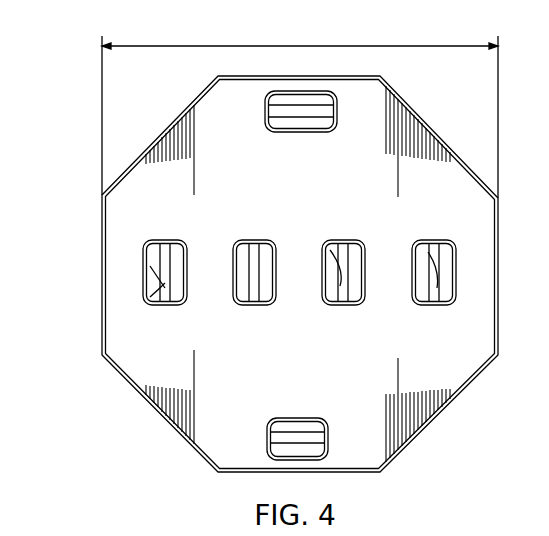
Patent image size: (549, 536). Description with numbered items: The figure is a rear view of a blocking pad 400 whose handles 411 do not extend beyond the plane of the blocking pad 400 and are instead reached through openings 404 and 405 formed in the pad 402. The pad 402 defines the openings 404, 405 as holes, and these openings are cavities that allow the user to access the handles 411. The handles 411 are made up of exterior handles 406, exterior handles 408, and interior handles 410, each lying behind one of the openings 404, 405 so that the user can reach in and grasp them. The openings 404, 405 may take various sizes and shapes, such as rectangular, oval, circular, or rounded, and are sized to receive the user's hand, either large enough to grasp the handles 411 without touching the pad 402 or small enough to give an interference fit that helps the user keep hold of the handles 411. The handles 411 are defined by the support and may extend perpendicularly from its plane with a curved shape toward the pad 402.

The blocking pad 400 is at (76, 214).
The pad 402 is at (100, 297).
The opening 404 is at (247, 244).
The opening 405 is at (270, 121).
The exterior handle 406 is at (302, 118).
The exterior handle 408 is at (161, 304).
The interior handle 410 is at (246, 304).
The handle 411 is at (255, 283).